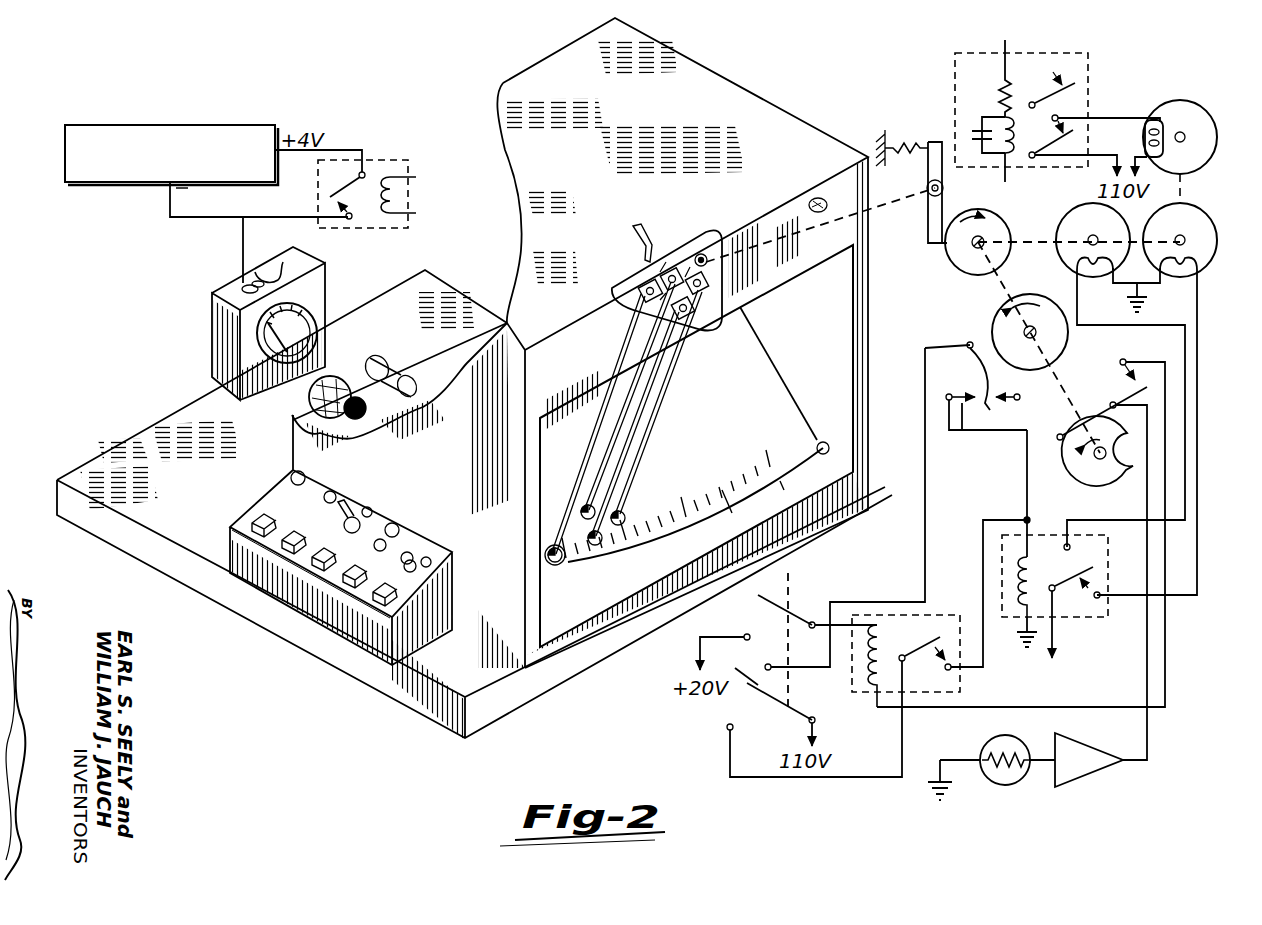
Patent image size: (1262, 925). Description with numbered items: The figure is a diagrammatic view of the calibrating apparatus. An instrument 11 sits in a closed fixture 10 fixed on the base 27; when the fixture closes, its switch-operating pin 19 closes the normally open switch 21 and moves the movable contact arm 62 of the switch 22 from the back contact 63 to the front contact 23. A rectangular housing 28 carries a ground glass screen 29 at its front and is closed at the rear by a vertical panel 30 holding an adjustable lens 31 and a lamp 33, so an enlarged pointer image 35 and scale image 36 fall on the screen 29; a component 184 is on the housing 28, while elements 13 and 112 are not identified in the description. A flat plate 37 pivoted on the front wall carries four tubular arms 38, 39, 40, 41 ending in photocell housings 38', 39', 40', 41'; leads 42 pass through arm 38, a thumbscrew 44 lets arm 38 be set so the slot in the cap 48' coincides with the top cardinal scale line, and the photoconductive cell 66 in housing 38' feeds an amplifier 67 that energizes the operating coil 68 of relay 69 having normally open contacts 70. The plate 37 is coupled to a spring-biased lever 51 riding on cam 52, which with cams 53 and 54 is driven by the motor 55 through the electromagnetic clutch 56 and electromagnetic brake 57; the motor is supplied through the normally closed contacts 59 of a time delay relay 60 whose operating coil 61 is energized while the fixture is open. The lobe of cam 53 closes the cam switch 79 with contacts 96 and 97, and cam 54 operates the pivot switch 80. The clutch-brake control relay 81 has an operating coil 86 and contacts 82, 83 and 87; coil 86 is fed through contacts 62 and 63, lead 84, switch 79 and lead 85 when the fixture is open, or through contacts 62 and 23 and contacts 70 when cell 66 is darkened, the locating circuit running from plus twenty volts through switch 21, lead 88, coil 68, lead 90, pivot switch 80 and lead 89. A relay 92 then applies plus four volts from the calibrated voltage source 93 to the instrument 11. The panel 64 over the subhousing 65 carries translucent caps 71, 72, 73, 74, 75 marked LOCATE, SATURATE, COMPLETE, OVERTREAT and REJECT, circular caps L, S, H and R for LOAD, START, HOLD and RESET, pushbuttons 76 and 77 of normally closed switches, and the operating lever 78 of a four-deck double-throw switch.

The fixture 10 is at (259, 323).
The instrument 11 is at (322, 301).
The meter terminals 13 is at (252, 282).
The switch-operating pin 19 is at (789, 580).
The normally open switch 21 is at (762, 607).
The fixture switch 22 is at (743, 689).
The front contact 23 is at (745, 702).
The base 27 is at (100, 460).
The housing 28 is at (706, 70).
The ground glass screen 29 is at (838, 352).
The vertical panel 30 is at (456, 345).
The adjustable lens 31 is at (401, 361).
The lamp 33 is at (338, 378).
The pointer image 35 is at (775, 356).
The scale image 36 is at (712, 478).
The flat plate 37 is at (703, 236).
The tubular arm 38 is at (598, 424).
The tubular arm 39 is at (627, 396).
The tubular arm 40 is at (653, 423).
The tubular arm 41 is at (659, 402).
The photocell housing 38' is at (522, 556).
The photocell housing 39' is at (569, 490).
The photocell housing 40' is at (610, 558).
The photocell housing 41' is at (642, 501).
The leads 42 is at (640, 232).
The thumbscrew 44 is at (645, 286).
The cap 48' is at (524, 541).
The lever 51 is at (928, 221).
The cam 52 is at (962, 274).
The cam 53 is at (996, 312).
The cam 54 is at (1080, 489).
The motor 55 is at (1186, 100).
The electromagnetic clutch 56 is at (1068, 220).
The electromagnetic brake 57 is at (1182, 208).
The normally closed contacts 59 is at (1075, 137).
The time delay relay 60 is at (953, 72).
The operating coil 61 is at (1000, 126).
The movable contact arm 62 is at (792, 708).
The back contact 63 is at (762, 680).
The panel 64 is at (327, 557).
The subhousing 65 is at (229, 537).
The photoconductive cell 66 is at (990, 746).
The amplifier 67 is at (1074, 742).
The operating coil 68 is at (872, 674).
The relay 69 is at (932, 622).
The normally open contacts 70 is at (933, 643).
The translucent cap 71 is at (258, 532).
The translucent cap 72 is at (288, 549).
The translucent cap 73 is at (320, 566).
The translucent cap 74 is at (350, 584).
The translucent cap 75 is at (383, 604).
The pushbutton 76 is at (381, 538).
The pushbutton 77 is at (416, 567).
The operating lever 78 is at (353, 514).
The cam switch 79 is at (975, 388).
The pivot switch 80 is at (1133, 391).
The clutch-brake control relay 81 is at (1072, 612).
The relay contact 82 is at (1060, 592).
The relay contact 83 is at (1098, 580).
The lead 84 is at (927, 528).
The lead 85 is at (1025, 455).
The operating coil 86 is at (1032, 572).
The relay contact 87 is at (1088, 553).
The lead 88 is at (840, 622).
The lead 89 is at (1142, 500).
The lead 90 is at (1168, 628).
The relay 92 is at (400, 157).
The calibrated voltage source 93 is at (62, 150).
The contact 96 is at (987, 429).
The contact 97 is at (985, 401).
The contact 112 is at (1008, 393).
The housing component 184 is at (815, 197).
The cap L is at (292, 472).
The cap S is at (332, 490).
The cap H is at (398, 524).
The cap R is at (426, 556).